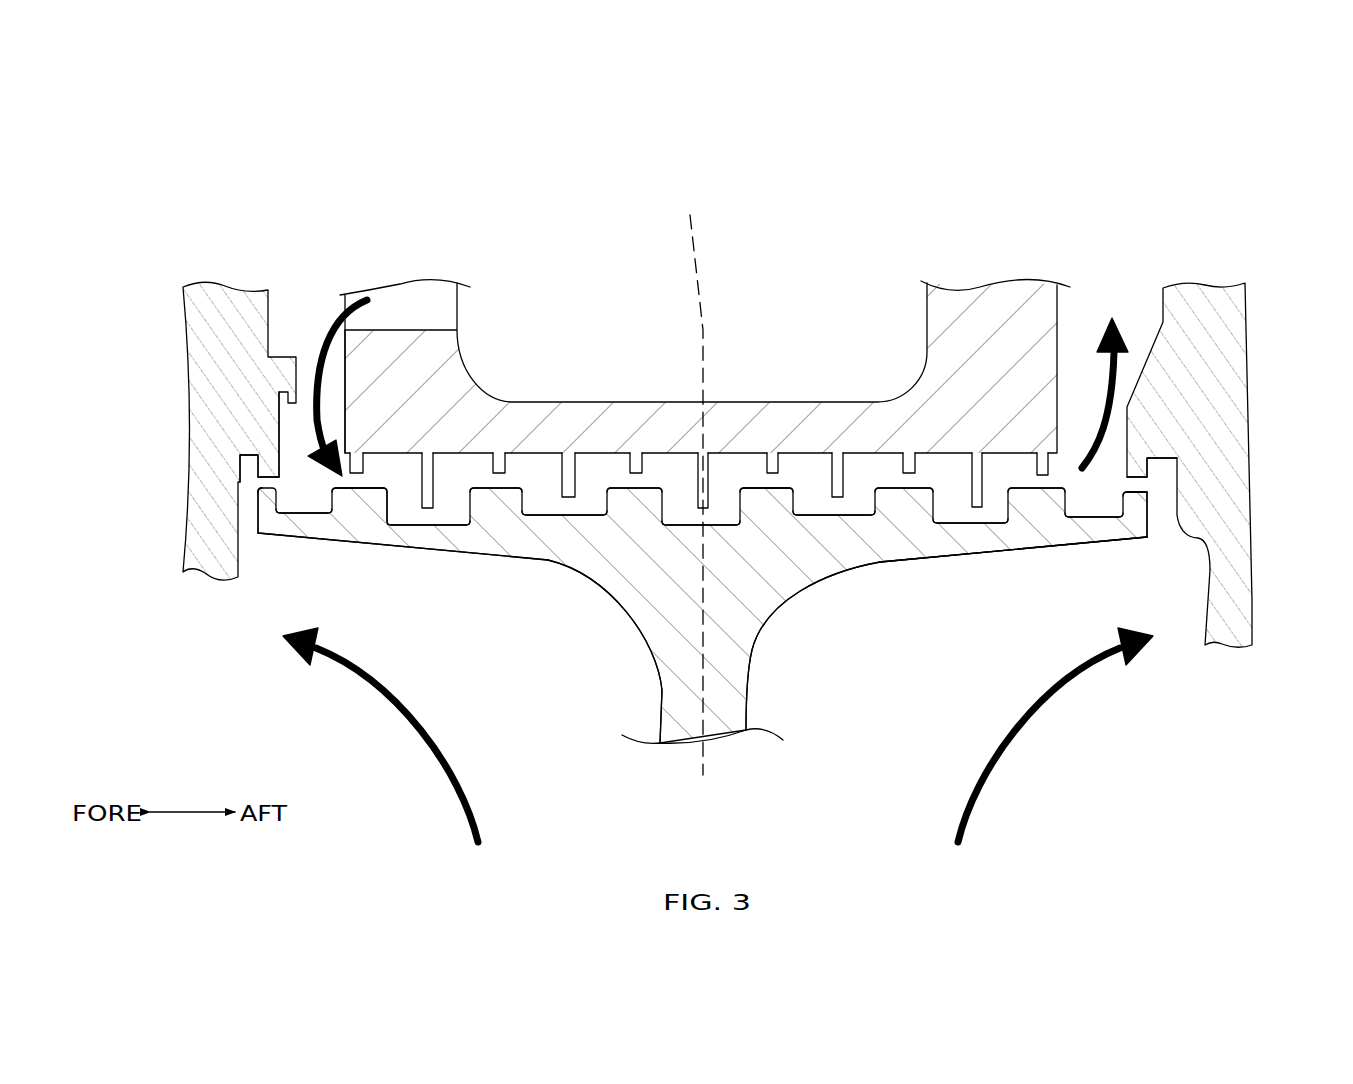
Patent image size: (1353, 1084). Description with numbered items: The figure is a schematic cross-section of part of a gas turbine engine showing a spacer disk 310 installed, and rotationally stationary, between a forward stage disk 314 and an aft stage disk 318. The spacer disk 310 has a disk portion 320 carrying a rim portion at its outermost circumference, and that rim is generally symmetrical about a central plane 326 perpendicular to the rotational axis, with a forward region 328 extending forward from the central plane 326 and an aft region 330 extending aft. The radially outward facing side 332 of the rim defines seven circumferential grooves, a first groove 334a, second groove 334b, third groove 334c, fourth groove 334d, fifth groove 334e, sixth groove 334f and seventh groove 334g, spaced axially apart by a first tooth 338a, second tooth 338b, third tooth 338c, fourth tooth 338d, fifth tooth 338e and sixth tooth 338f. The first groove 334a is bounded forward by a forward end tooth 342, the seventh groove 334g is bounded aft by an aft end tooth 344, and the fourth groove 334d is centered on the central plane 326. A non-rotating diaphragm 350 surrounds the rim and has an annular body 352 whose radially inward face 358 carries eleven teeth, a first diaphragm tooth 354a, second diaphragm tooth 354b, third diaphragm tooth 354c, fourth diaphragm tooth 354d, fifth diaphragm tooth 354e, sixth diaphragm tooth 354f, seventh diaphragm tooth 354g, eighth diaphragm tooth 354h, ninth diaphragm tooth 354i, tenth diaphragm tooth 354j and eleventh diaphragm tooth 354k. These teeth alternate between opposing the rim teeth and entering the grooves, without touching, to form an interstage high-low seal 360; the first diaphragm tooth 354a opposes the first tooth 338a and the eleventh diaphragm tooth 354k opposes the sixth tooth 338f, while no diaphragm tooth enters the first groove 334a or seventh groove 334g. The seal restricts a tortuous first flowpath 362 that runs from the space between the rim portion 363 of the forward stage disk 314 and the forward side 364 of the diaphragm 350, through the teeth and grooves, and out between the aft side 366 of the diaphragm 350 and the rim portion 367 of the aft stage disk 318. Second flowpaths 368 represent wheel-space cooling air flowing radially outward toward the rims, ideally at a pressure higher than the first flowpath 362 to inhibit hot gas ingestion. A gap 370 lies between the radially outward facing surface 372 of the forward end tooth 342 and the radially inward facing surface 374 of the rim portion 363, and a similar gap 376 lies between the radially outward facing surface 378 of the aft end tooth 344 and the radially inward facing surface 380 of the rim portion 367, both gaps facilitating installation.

The spacer disk 310 is at (884, 691).
The forward stage disk 314 is at (190, 483).
The aft stage disk 318 is at (1228, 521).
The disk portion 320 is at (764, 712).
The central plane 326 is at (688, 483).
The forward region 328 is at (427, 560).
The aft region 330 is at (1060, 555).
The radially outward facing side 332 is at (787, 480).
The first groove 334a is at (296, 517).
The second groove 334b is at (457, 506).
The third groove 334c is at (582, 513).
The fourth groove 334d is at (675, 521).
The fifth groove 334e is at (866, 513).
The sixth groove 334f is at (960, 525).
The seventh groove 334g is at (1098, 510).
The first tooth 338a is at (343, 503).
The second tooth 338b is at (515, 493).
The third tooth 338c is at (633, 503).
The fourth tooth 338d is at (773, 505).
The fifth tooth 338e is at (900, 505).
The sixth tooth 338f is at (1067, 500).
The forward end tooth 342 is at (268, 500).
The aft end tooth 344 is at (1145, 500).
The diaphragm 350 is at (697, 411).
The annular body 352 is at (1012, 305).
The first diaphragm tooth 354a is at (356, 468).
The second diaphragm tooth 354b is at (428, 500).
The third diaphragm tooth 354c is at (499, 468).
The fourth diaphragm tooth 354d is at (570, 503).
The fifth diaphragm tooth 354e is at (637, 462).
The sixth diaphragm tooth 354f is at (707, 495).
The seventh diaphragm tooth 354g is at (771, 462).
The eighth diaphragm tooth 354h is at (840, 465).
The ninth diaphragm tooth 354i is at (910, 462).
The tenth diaphragm tooth 354j is at (977, 490).
The eleventh diaphragm tooth 354k is at (1043, 463).
The radially inward face 358 is at (375, 500).
The interstage high-low seal 360 is at (404, 518).
The first flowpath 362 is at (320, 340).
The rim portion of forward stage disk 363 is at (220, 338).
The forward side 364 is at (343, 305).
The aft side 366 is at (1056, 456).
The rim portion of aft stage disk 367 is at (1215, 340).
The second flowpaths 368 is at (447, 772).
The gap 370 is at (260, 483).
The radially outward facing surface 372 is at (262, 486).
The radially inward facing surface 374 is at (262, 480).
The gap 376 is at (1153, 483).
The radially outward facing surface 378 is at (1150, 491).
The radially inward facing surface 380 is at (1144, 479).